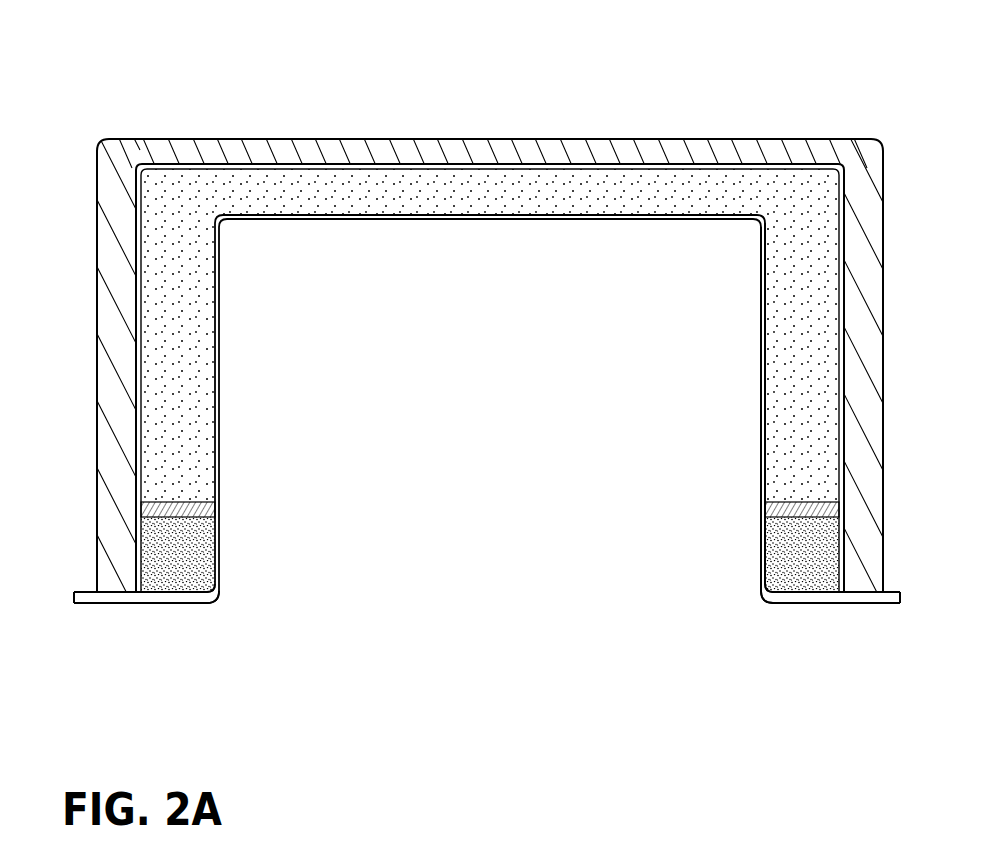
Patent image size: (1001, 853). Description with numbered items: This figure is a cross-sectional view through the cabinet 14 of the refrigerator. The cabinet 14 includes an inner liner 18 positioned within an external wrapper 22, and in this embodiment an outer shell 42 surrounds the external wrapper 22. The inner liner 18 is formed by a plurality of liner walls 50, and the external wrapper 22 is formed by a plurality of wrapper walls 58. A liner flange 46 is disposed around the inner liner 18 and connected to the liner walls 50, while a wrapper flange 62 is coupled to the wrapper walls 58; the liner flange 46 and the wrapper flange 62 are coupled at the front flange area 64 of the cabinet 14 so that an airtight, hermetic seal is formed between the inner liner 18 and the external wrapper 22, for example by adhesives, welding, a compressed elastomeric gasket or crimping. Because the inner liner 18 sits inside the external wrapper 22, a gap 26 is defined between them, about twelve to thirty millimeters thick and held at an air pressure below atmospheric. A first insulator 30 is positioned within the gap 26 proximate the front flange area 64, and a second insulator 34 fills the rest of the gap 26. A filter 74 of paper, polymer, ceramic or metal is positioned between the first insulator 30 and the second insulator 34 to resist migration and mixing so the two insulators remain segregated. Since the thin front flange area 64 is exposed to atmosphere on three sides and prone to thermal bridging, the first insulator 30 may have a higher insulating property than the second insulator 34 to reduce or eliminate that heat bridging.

The cabinet 14 is at (877, 84).
The external wrapper 22 is at (731, 160).
The wrapper walls 58 is at (636, 163).
The shell 42 is at (877, 247).
The gap 26 is at (489, 197).
The second insulator 34 is at (362, 203).
The inner liner 18 is at (635, 225).
The liner walls 50 is at (760, 408).
The first insulator 30 is at (198, 583).
The wrapper flange 62 is at (88, 592).
The liner flange 46 is at (185, 605).
The filter 74 is at (217, 503).
The front flange area 64 is at (226, 574).